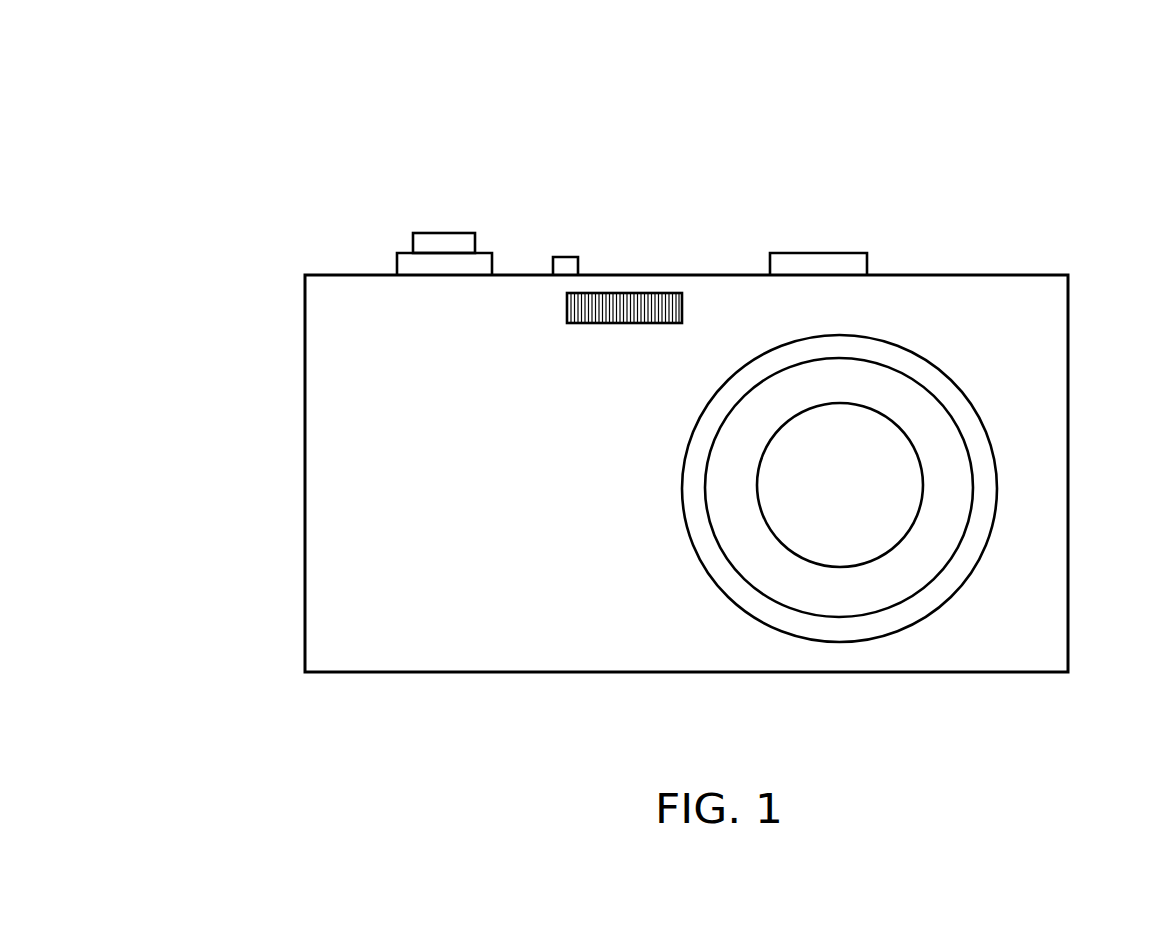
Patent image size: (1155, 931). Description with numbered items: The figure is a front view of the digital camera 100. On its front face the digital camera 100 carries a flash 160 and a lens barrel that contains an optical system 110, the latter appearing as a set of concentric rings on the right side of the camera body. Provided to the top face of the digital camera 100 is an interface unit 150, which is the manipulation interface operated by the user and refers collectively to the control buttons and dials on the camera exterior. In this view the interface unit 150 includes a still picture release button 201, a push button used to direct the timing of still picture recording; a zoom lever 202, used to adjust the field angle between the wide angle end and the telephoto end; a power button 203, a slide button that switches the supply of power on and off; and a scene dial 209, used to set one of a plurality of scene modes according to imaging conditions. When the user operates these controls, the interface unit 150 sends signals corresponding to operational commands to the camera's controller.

The digital camera 100 is at (319, 125).
The optical system 110 is at (882, 503).
The interface unit 150 is at (762, 142).
The flash 160 is at (633, 312).
The still picture release button 201 is at (433, 245).
The zoom lever 202 is at (483, 263).
The power button 203 is at (565, 265).
The scene dial 209 is at (820, 265).